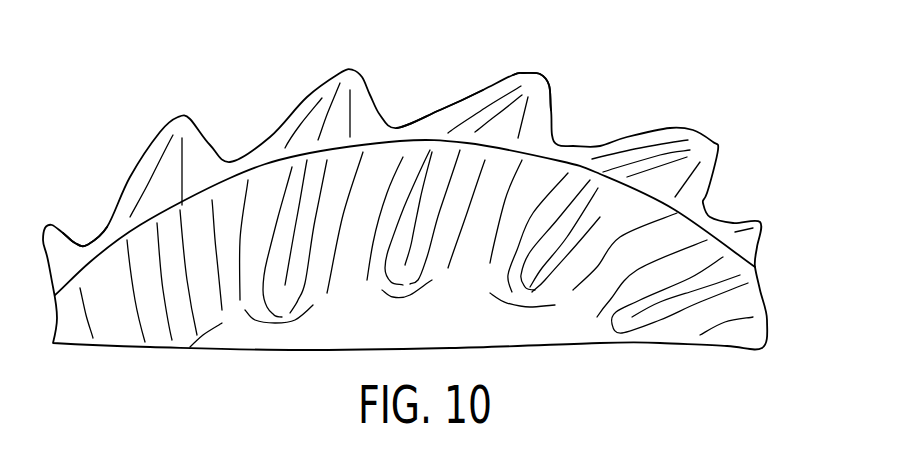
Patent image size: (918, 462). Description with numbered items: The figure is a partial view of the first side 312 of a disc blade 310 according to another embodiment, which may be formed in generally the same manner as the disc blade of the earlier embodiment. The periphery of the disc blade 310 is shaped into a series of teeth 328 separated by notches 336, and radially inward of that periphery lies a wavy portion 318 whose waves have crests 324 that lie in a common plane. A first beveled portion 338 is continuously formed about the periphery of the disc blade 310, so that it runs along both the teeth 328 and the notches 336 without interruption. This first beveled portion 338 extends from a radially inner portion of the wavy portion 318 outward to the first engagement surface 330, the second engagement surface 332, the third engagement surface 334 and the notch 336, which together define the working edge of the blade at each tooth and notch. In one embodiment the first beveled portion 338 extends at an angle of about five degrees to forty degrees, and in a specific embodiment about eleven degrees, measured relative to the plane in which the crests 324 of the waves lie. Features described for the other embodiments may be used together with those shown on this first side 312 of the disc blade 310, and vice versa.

The disc blade 310 is at (112, 80).
The first side 312 is at (748, 282).
The wavy portion 318 is at (677, 208).
The crests 324 is at (579, 217).
The teeth 328 is at (190, 168).
The first engagement surface 330 is at (537, 115).
The second engagement surface 332 is at (463, 97).
The third engagement surface 334 is at (535, 76).
The notch 336 is at (92, 243).
The first beveled portion 338 is at (350, 93).